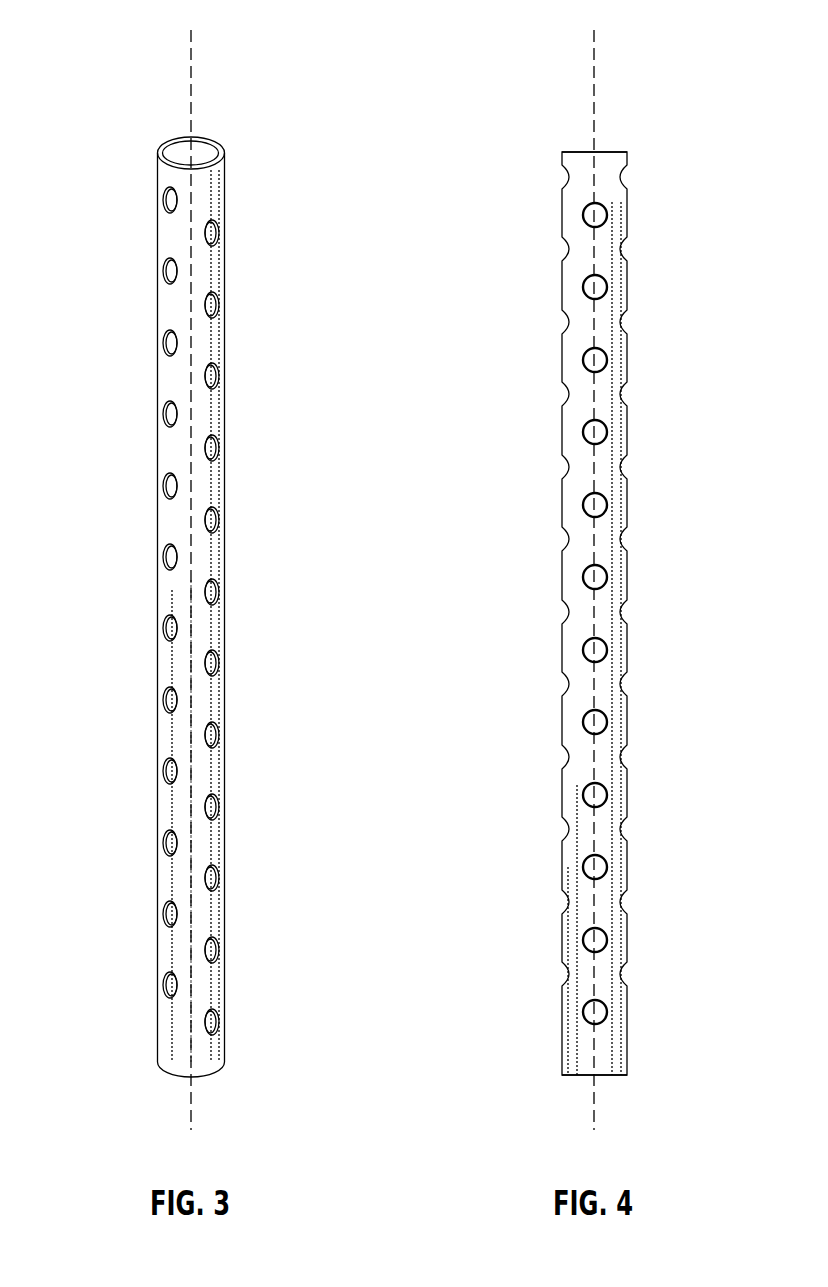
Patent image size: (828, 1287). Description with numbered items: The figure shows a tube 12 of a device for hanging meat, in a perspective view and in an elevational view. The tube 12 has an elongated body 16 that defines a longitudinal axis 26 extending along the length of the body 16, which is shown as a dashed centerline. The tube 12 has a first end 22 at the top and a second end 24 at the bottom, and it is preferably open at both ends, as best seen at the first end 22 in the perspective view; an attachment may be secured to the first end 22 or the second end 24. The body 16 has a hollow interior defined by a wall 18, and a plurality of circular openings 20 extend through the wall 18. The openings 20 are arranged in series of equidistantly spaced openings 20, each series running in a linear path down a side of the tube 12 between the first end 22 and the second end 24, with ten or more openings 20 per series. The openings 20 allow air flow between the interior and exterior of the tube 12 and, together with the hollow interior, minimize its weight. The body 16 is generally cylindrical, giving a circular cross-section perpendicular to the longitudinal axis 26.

In FIG. 3, the tube 12 is at (100, 183).
In FIG. 4, the tube 12 is at (623, 127).
In FIG. 3, the body 16 is at (167, 520).
In FIG. 4, the body 16 is at (578, 567).
In FIG. 3, the wall 18 is at (215, 144).
In FIG. 3, the openings 20 is at (173, 345).
In FIG. 4, the openings 20 is at (599, 214).
In FIG. 3, the first end 22 is at (182, 136).
In FIG. 4, the first end 22 is at (587, 145).
In FIG. 3, the second end 24 is at (172, 1078).
In FIG. 4, the second end 24 is at (607, 1079).
In FIG. 3, the longitudinal axis 26 is at (190, 57).
In FIG. 4, the longitudinal axis 26 is at (594, 56).